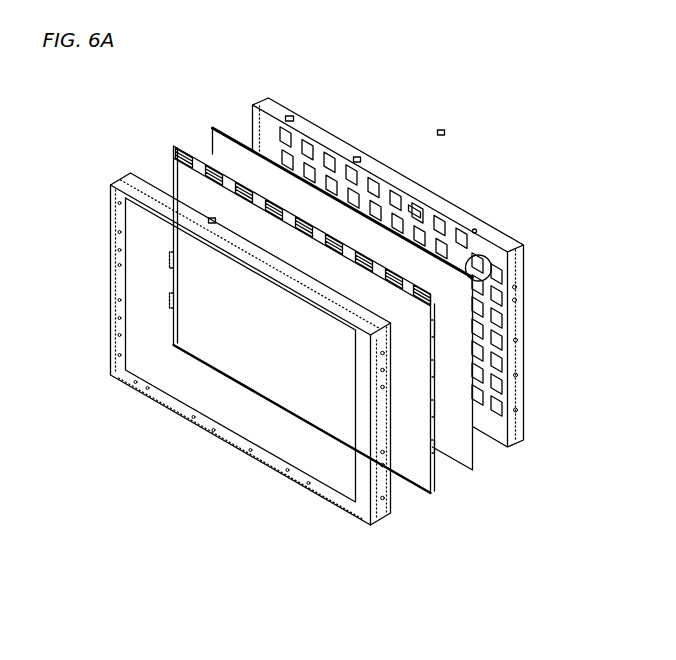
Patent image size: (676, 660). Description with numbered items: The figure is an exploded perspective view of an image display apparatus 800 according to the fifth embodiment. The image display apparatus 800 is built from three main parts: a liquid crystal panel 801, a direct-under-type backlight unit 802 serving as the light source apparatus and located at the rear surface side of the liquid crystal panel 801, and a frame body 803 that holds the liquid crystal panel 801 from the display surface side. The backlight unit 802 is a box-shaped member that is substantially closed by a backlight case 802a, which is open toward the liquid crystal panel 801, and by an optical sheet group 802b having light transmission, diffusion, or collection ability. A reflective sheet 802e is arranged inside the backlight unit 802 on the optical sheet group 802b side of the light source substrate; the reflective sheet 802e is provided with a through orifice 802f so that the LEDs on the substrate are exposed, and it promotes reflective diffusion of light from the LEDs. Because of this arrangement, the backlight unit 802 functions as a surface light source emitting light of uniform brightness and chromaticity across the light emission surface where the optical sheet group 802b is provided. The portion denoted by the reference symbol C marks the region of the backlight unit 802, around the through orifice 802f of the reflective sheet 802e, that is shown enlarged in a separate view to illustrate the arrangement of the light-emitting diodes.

The image display apparatus 800 is at (150, 102).
The liquid crystal panel 801 is at (270, 305).
The backlight unit 802 is at (364, 273).
The backlight case 802a is at (391, 253).
The optical sheet group 802b is at (349, 296).
The reflective sheet 802e is at (461, 180).
The through orifice 802f is at (502, 222).
The frame body 803 is at (225, 333).
The portion C is at (501, 235).